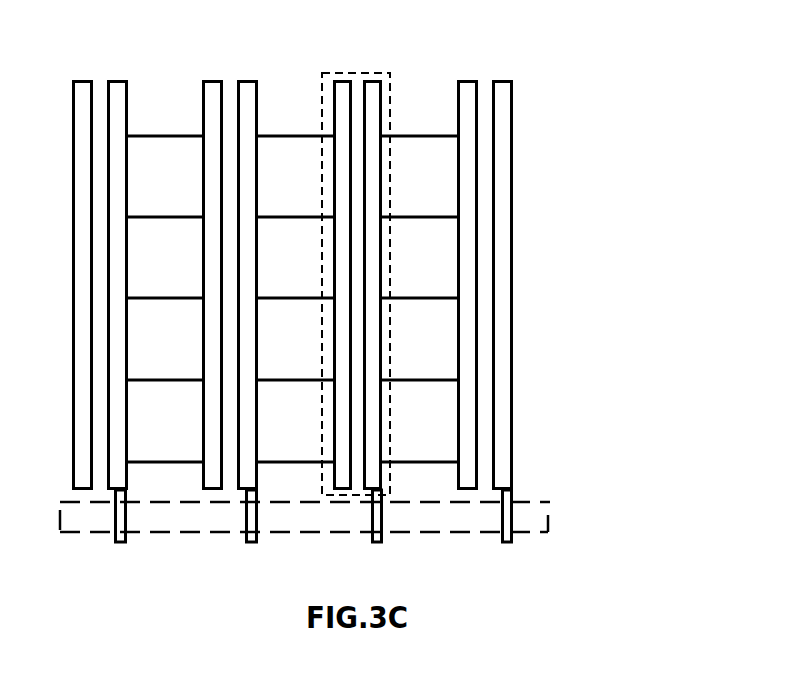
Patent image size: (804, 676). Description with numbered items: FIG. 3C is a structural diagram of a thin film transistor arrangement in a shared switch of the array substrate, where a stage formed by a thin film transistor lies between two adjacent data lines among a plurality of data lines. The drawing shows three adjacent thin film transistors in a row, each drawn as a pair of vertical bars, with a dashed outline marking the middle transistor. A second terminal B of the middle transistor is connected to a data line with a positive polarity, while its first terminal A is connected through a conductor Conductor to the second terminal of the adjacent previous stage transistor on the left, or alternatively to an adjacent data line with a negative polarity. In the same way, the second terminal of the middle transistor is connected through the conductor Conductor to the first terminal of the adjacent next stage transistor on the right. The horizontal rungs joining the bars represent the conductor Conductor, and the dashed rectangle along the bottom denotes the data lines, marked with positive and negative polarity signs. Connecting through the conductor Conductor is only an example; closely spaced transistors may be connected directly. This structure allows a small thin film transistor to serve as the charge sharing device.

The conductor Conductor is at (153, 131).
The first terminal A is at (331, 112).
The second terminal B is at (385, 112).